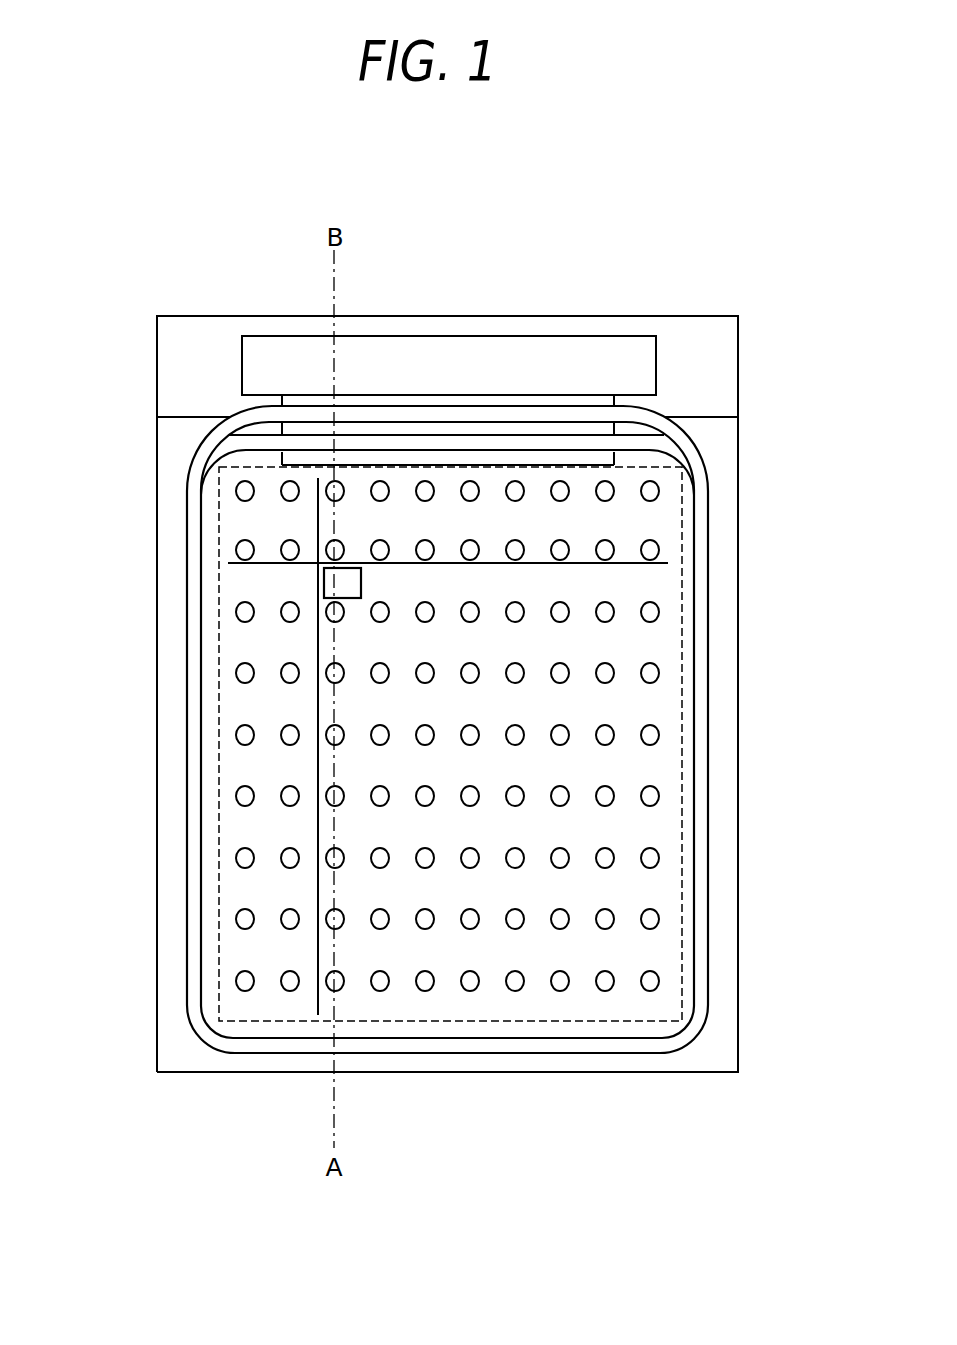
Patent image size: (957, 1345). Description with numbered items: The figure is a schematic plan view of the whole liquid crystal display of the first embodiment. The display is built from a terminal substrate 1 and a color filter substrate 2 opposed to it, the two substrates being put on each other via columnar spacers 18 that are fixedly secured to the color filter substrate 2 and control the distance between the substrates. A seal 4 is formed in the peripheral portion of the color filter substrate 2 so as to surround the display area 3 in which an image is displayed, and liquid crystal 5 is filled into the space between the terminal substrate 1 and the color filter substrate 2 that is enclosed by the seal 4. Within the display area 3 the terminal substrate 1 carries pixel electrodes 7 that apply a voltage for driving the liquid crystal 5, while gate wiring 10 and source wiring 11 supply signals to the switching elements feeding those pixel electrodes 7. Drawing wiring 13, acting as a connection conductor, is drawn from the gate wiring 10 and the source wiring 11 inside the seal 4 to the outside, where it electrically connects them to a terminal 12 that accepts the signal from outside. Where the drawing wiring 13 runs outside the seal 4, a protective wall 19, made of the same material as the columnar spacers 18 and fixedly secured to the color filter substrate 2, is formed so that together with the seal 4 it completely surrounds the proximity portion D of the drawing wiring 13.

The terminal substrate 1 is at (695, 362).
The color filter substrate 2 is at (711, 1043).
The display area 3 is at (688, 862).
The seal 4 is at (704, 612).
The liquid crystal 5 is at (266, 835).
The pixel electrode 7 is at (323, 585).
The gate wiring 10 is at (290, 564).
The source wiring 11 is at (318, 507).
The terminal 12 is at (537, 365).
The drawing wiring 13 is at (283, 401).
The columnar spacer 18 is at (243, 676).
The protective wall 19 is at (639, 415).
The proximity portion D is at (372, 430).